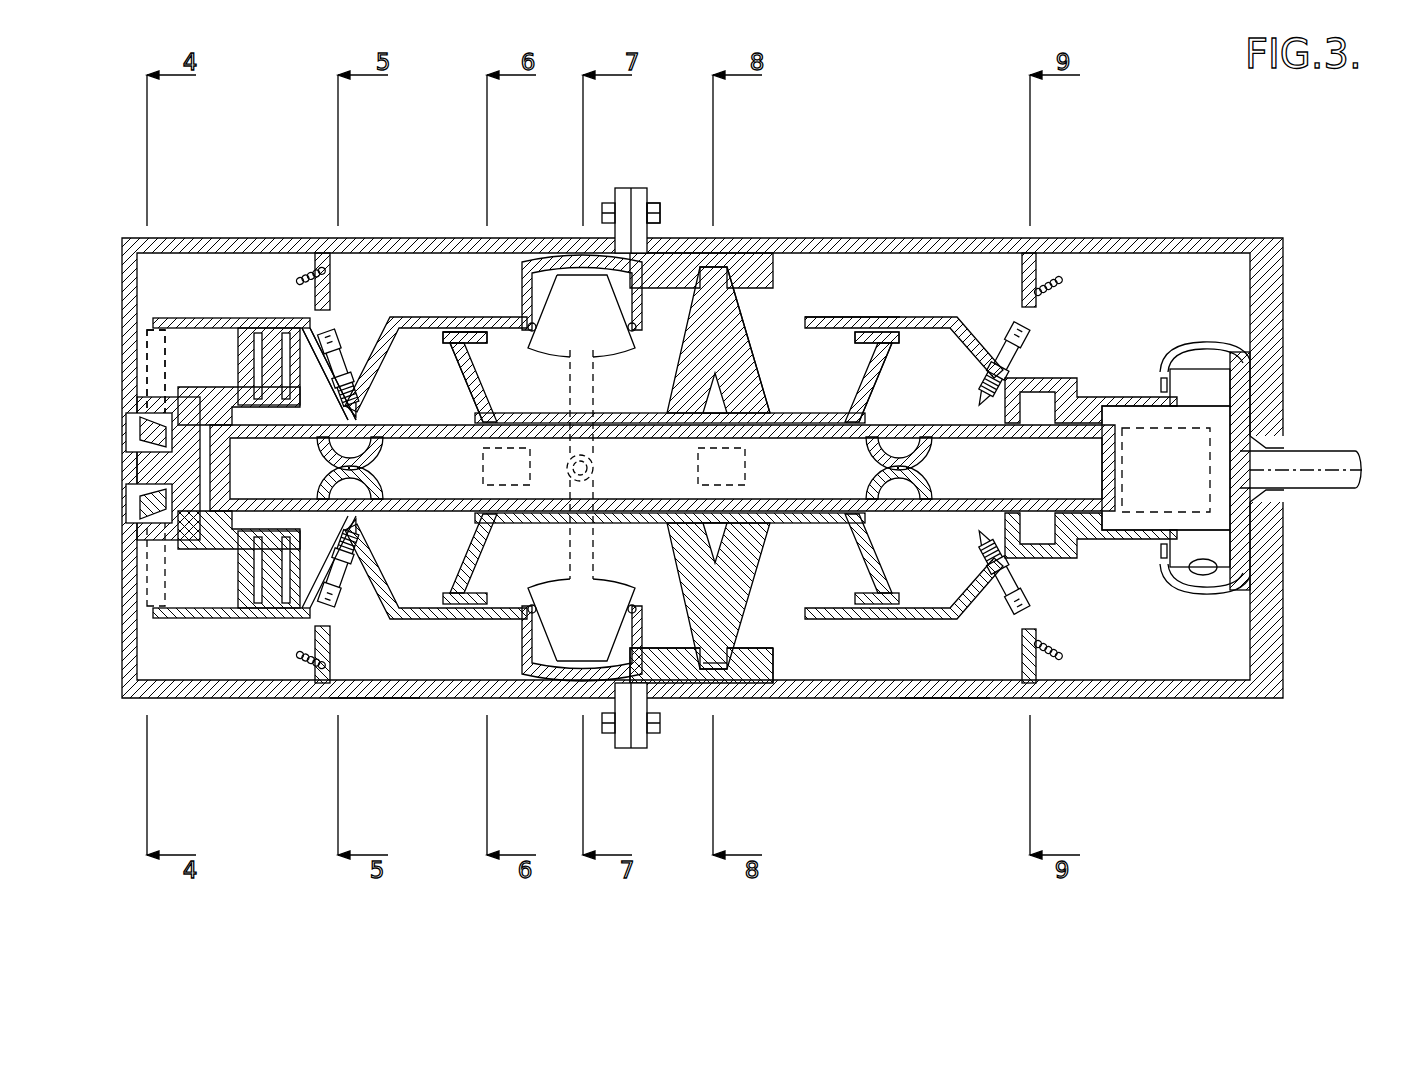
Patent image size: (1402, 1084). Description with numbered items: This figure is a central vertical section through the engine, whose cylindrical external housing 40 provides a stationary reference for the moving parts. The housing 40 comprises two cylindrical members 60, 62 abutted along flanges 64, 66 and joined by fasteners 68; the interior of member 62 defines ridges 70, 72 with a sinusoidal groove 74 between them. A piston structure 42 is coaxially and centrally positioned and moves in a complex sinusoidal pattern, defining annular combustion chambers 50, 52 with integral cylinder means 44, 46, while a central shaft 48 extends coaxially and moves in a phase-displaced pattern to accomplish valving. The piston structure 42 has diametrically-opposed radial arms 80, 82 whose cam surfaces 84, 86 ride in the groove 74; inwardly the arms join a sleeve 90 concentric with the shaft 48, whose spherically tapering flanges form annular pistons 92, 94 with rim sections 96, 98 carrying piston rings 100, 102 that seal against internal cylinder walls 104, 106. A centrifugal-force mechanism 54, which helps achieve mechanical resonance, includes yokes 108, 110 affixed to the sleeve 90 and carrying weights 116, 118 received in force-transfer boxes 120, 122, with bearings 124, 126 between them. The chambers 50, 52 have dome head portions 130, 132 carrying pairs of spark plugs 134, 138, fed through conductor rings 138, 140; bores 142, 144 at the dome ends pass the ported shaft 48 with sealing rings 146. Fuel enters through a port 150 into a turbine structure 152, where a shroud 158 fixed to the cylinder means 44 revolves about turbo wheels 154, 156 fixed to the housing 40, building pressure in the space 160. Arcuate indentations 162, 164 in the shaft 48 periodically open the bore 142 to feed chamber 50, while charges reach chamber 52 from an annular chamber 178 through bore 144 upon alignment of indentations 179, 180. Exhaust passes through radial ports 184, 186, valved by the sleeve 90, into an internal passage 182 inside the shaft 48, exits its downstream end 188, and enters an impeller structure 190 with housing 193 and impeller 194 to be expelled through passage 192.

The external housing 40 is at (892, 701).
The piston structure 42 is at (748, 361).
The cylinder means 44 is at (402, 318).
The cylinder means 46 is at (893, 320).
The central shaft 48 is at (870, 429).
The combustion chamber 50 is at (326, 551).
The combustion chamber 52 is at (904, 566).
The centrifugal-force mechanism 54 is at (595, 392).
The cylindrical member 60 is at (363, 699).
The cylindrical member 62 is at (932, 699).
The flange 64 is at (624, 190).
The flange 66 is at (648, 200).
The fasteners 68 is at (648, 738).
The ridge 70 is at (675, 648).
The ridge 72 is at (757, 648).
The sinusoidal groove 74 is at (776, 668).
The radial arm 80 is at (760, 380).
The radial arm 82 is at (758, 578).
The cam surface 84 is at (730, 270).
The cam surface 86 is at (722, 665).
The sleeve 90 is at (620, 413).
The annular piston 92 is at (460, 382).
The annular piston 94 is at (885, 374).
The rim section 96 is at (474, 343).
The rim section 98 is at (858, 342).
The piston ring 100 is at (450, 332).
The piston ring 102 is at (870, 330).
The internal cylinder wall 104 is at (402, 330).
The internal cylinder wall 106 is at (910, 332).
The yoke 108 is at (562, 386).
The yoke 110 is at (596, 547).
The weight 116 is at (581, 316).
The weight 118 is at (581, 620).
The force-transfer box 120 is at (643, 300).
The force-transfer box 122 is at (523, 662).
The bearings 124 is at (630, 330).
The bearings 126 is at (533, 604).
The dome head portion 130 is at (358, 375).
The dome head portion 132 is at (987, 368).
The pair of spark plugs 134 is at (357, 352).
The pair of spark plugs 138 is at (330, 300).
The conductor ring 140 is at (1033, 300).
The bore 142 is at (330, 400).
The bore 144 is at (1045, 400).
The sealing rings 146 is at (352, 420).
The port 150 is at (140, 412).
The turbine structure 152 is at (250, 336).
The turbo wheel 154 is at (268, 332).
The turbo wheel 156 is at (286, 338).
The shroud 158 is at (195, 318).
The space 160 is at (340, 545).
The arcuate indentation 162 is at (330, 445).
The arcuate indentation 164 is at (345, 488).
The annular chamber 178 is at (1127, 553).
The arcuate indentation 179 is at (900, 445).
The arcuate indentation 180 is at (900, 506).
The internal passage 182 is at (662, 468).
The radial port 184 is at (506, 466).
The radial port 186 is at (721, 466).
The downstream end 188 is at (1122, 508).
The impeller structure 190 is at (1182, 592).
The passage 192 is at (1205, 576).
The housing 193 is at (1160, 550).
The impeller 194 is at (1165, 380).